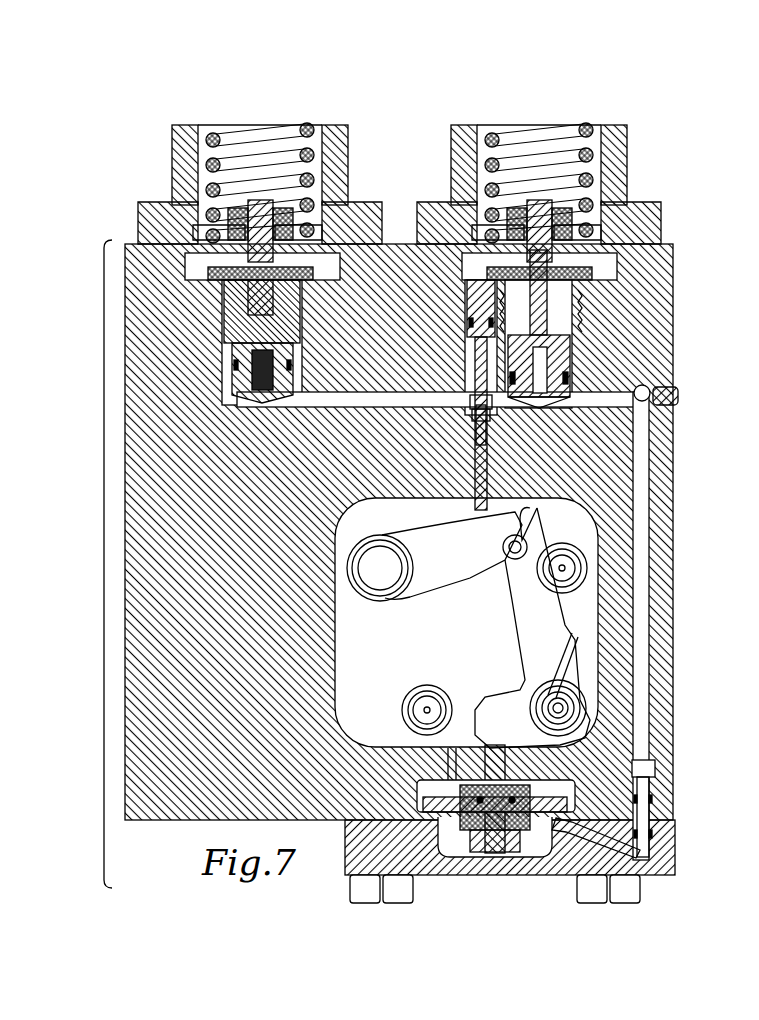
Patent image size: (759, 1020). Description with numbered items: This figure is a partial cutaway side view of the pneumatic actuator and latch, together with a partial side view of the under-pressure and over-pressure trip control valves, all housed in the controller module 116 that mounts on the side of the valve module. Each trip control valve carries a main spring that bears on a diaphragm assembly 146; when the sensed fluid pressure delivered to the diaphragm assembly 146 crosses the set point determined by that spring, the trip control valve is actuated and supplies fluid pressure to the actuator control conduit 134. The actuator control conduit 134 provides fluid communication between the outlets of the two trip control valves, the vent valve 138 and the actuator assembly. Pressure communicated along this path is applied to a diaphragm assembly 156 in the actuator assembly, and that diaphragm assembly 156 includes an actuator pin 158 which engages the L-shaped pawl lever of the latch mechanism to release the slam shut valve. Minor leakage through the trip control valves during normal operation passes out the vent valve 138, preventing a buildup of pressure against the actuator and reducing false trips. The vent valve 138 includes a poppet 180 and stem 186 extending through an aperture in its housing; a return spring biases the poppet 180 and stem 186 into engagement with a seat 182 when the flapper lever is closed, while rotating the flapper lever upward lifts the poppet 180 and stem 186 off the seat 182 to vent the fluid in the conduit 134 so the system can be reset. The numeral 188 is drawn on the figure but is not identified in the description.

The controller module 116 is at (104, 564).
The actuator control conduit 134 is at (643, 628).
The vent valve 138 is at (470, 378).
The diaphragm assembly 146 is at (335, 240).
The diaphragm assembly 156 is at (575, 820).
The actuator pin 158 is at (470, 775).
The poppet 180 is at (470, 406).
The seat 182 is at (470, 424).
The stem 186 is at (492, 457).
The rod tip 188 is at (490, 488).